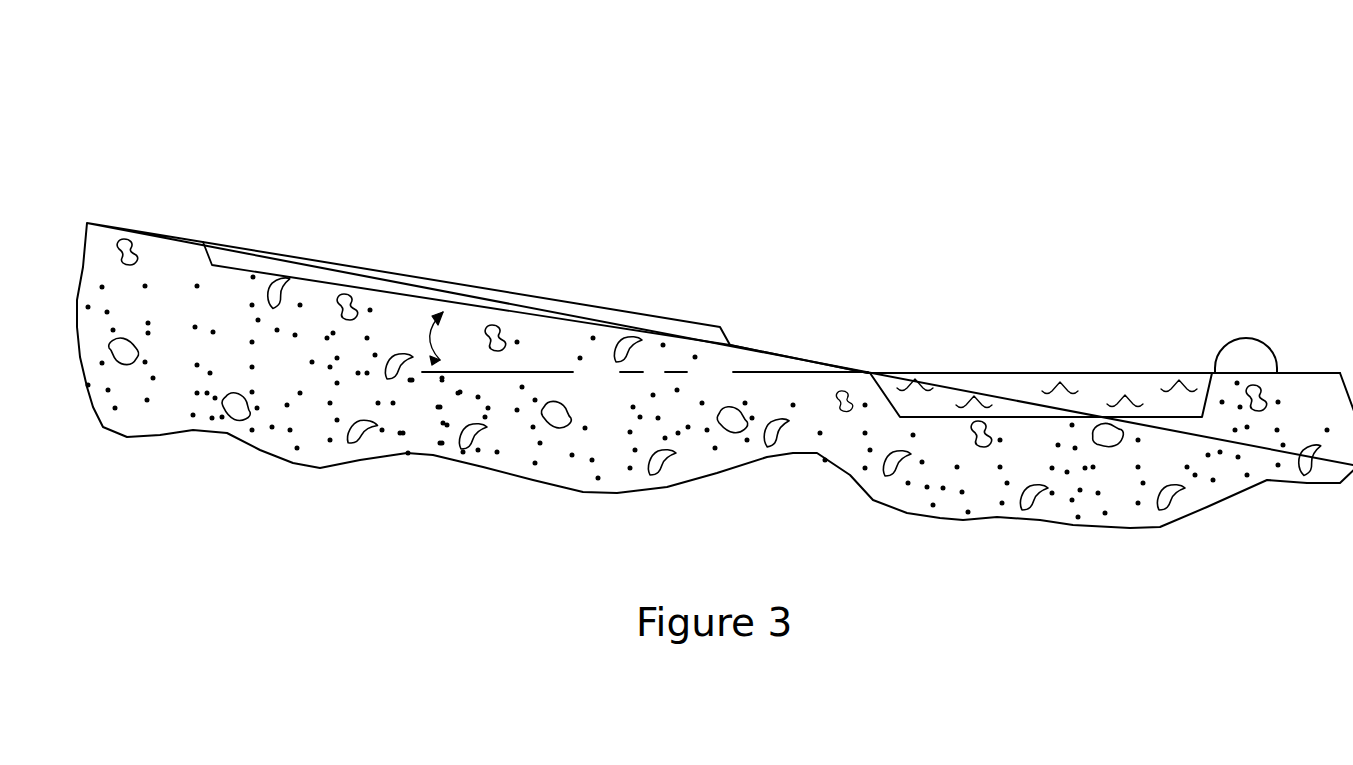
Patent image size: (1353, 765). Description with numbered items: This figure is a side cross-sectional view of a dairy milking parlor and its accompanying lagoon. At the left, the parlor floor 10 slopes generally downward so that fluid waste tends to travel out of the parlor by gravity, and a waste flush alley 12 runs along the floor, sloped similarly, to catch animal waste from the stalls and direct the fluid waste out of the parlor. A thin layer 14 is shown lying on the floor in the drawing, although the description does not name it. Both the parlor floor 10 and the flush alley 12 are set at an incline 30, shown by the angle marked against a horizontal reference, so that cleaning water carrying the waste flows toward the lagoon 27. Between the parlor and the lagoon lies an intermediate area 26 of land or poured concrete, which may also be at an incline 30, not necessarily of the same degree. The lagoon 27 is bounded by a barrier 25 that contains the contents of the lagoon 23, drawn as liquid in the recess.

The parlor floor 10 is at (137, 229).
The waste flush alley 12 is at (362, 285).
The surface layer 14 is at (281, 255).
The contents of the lagoon 23 is at (945, 390).
The barrier 25 is at (1244, 361).
The intermediate area 26 is at (780, 356).
The lagoon 27 is at (1197, 199).
The incline 30 is at (432, 337).